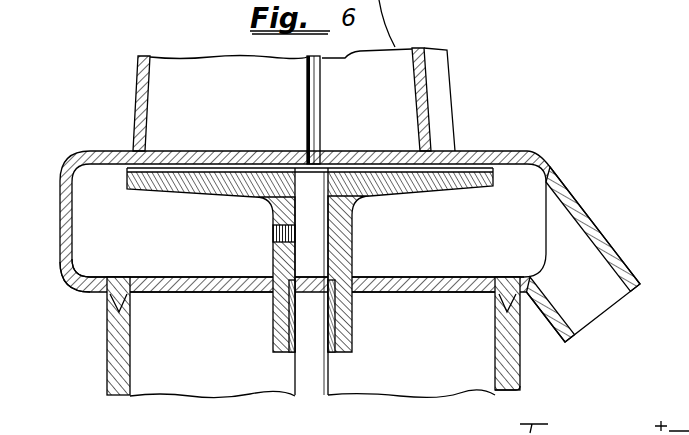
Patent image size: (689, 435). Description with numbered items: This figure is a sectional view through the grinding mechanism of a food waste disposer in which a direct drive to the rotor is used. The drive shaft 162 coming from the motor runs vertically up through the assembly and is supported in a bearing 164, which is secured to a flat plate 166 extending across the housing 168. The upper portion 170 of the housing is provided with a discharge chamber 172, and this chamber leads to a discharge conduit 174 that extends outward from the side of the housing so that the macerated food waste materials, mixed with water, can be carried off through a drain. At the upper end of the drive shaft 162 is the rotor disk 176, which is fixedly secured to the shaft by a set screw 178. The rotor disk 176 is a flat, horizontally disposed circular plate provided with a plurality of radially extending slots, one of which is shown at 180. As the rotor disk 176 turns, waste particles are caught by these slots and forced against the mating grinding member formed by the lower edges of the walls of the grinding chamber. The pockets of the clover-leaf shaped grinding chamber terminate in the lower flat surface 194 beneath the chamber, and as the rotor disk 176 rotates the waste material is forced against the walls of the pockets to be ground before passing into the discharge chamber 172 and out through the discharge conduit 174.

The drive shaft 162 is at (324, 334).
The bearing 164 is at (340, 311).
The flat plate 166 is at (213, 292).
The housing 168 is at (107, 344).
The upper portion of the housing 170 is at (68, 230).
The discharge chamber 172 is at (72, 282).
The discharge conduit 174 is at (598, 310).
The rotor disk 176 is at (349, 222).
The set screw 178 is at (273, 238).
The radially extending slot 180 is at (200, 168).
The lower flat surface 194 is at (130, 160).